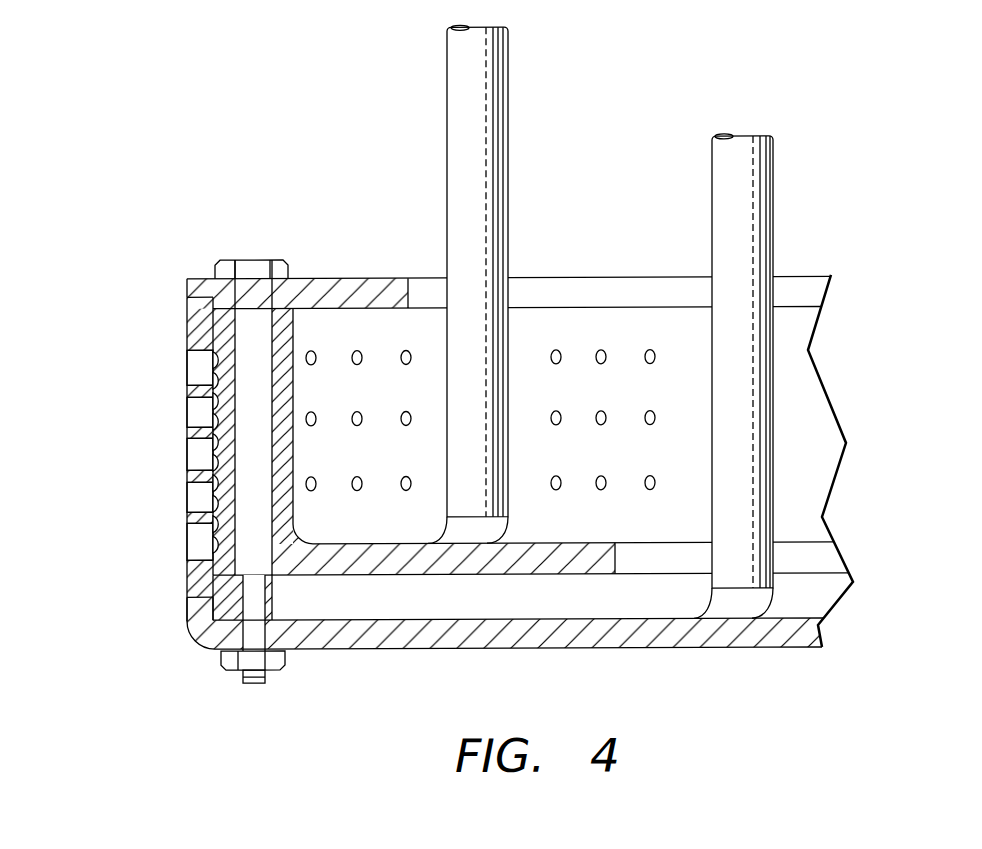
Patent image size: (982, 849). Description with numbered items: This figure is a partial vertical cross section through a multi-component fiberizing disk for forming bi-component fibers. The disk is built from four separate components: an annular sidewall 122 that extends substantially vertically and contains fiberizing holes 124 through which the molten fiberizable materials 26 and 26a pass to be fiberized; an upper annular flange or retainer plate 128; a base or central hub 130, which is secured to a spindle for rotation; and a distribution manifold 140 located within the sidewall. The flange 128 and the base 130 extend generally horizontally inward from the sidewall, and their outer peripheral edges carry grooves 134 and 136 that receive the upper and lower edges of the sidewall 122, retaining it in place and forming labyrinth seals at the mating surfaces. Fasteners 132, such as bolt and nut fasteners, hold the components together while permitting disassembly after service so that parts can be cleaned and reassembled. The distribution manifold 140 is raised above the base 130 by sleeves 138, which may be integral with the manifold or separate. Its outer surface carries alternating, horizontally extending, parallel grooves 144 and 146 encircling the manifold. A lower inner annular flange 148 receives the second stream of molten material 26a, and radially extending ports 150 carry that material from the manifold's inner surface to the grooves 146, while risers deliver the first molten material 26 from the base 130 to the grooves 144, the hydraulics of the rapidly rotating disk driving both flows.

The molten fiberizable material 26 is at (740, 210).
The molten fiberizable material 26a is at (477, 94).
The annular sidewall 122 is at (188, 578).
The fiberizing holes 124 is at (186, 361).
The upper annular flange or retainer plate 128 is at (313, 279).
The base or central hub 130 is at (439, 678).
The fasteners 132 is at (253, 686).
The groove 134 is at (186, 298).
The groove 136 is at (186, 599).
The sleeves 138 is at (273, 588).
The distribution manifold 140 is at (531, 485).
The grooves 144 is at (212, 384).
The grooves 146 is at (212, 363).
The lower inner annular flange 148 is at (442, 551).
The radially extending ports 150 is at (557, 340).